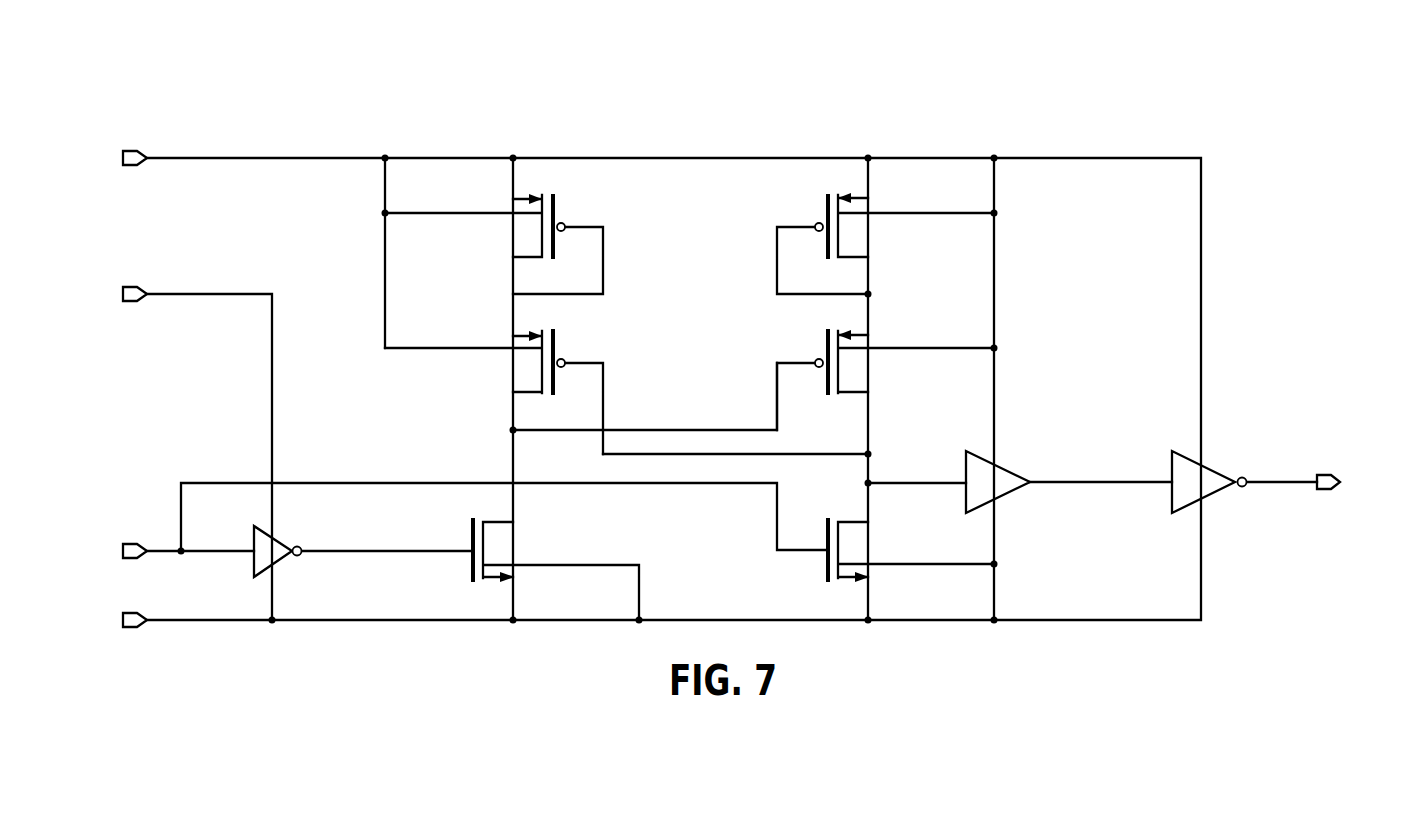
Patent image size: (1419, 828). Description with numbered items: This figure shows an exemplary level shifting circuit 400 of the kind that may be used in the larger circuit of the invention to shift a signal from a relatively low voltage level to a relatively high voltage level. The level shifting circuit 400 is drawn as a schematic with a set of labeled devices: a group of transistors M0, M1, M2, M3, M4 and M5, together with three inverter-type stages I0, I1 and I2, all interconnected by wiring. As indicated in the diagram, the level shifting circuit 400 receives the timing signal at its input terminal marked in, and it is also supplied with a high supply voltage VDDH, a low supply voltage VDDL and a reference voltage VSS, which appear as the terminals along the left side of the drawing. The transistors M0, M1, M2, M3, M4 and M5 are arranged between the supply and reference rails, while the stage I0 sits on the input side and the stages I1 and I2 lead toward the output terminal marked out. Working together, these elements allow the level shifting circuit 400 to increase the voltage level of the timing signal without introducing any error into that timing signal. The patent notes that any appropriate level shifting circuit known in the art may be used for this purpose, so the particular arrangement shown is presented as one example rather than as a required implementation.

The level shifting circuit 400 is at (1188, 66).
The NMOS transistor M0 is at (470, 570).
The NMOS transistor M1 is at (911, 551).
The PMOS transistor M2 is at (885, 373).
The PMOS transistor M3 is at (494, 385).
The PMOS transistor M4 is at (885, 237).
The PMOS transistor M5 is at (494, 237).
The inverter I0 is at (284, 539).
The buffer I1 is at (1000, 477).
The inverter I2 is at (1209, 477).